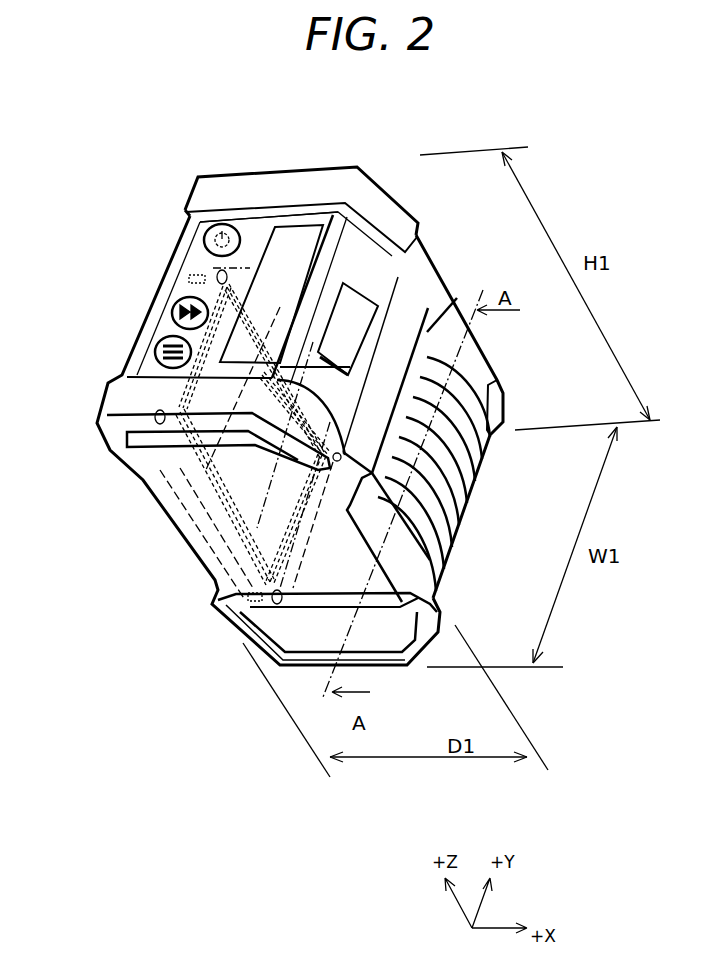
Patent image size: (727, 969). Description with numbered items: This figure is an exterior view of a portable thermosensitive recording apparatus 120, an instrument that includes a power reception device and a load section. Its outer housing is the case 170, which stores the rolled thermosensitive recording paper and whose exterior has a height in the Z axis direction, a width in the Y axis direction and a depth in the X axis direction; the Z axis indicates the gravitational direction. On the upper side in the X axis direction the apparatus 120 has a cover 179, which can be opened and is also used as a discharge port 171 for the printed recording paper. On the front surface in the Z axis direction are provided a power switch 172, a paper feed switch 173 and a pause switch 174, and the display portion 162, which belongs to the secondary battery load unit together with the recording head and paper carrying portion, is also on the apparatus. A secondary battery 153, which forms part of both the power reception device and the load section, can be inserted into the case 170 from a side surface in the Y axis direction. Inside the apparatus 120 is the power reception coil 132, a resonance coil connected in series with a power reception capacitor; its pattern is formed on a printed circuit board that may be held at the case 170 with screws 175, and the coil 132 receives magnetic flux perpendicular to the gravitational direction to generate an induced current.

The portable thermosensitive recording apparatus 120 is at (322, 148).
The case 170 is at (207, 183).
The power switch 172 is at (213, 238).
The display portion 162 is at (257, 278).
The paper feed switch 173 is at (172, 307).
The pause switch 174 is at (160, 350).
The discharge port 171 is at (395, 365).
The cover 179 is at (427, 488).
The secondary battery 153 is at (187, 493).
The power reception coil 132 is at (247, 548).
The screws 175 is at (252, 597).